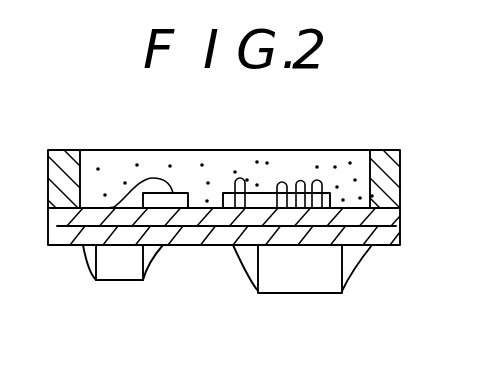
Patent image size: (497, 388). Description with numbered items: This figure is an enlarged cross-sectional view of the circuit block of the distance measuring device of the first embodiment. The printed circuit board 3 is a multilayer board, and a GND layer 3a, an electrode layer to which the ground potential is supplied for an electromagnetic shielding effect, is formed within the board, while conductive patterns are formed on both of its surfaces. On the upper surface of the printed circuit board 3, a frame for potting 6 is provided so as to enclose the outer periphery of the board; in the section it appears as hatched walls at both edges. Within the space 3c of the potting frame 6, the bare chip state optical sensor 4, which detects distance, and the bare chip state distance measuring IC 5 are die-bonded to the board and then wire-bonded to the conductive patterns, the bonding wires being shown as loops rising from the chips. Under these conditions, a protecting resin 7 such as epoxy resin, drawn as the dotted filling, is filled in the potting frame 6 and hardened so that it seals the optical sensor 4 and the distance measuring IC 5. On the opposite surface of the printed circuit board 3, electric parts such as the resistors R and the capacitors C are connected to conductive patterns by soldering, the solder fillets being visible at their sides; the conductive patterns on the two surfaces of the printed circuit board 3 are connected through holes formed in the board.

The printed circuit board 3 is at (389, 243).
The GND layer 3a is at (368, 239).
The space 3c is at (349, 208).
The optical sensor 4 is at (177, 198).
The distance measuring IC 5 is at (256, 205).
The frame for potting 6 is at (388, 184).
The protecting resin 7 is at (298, 165).
The resistors R is at (122, 274).
The capacitors C is at (308, 283).